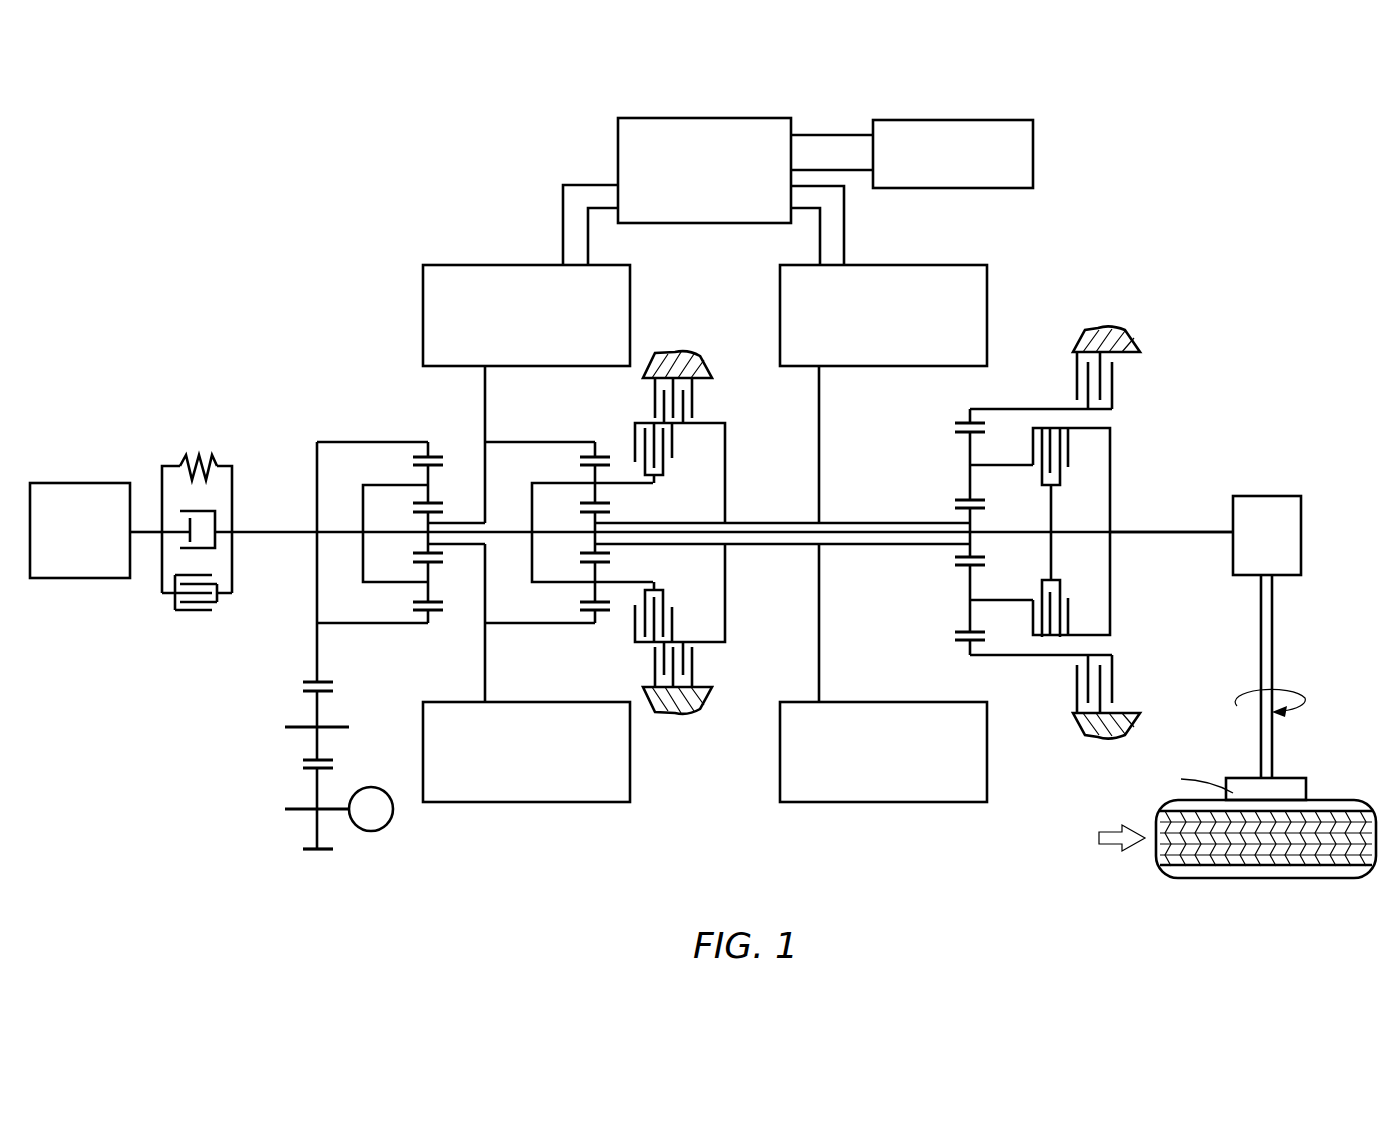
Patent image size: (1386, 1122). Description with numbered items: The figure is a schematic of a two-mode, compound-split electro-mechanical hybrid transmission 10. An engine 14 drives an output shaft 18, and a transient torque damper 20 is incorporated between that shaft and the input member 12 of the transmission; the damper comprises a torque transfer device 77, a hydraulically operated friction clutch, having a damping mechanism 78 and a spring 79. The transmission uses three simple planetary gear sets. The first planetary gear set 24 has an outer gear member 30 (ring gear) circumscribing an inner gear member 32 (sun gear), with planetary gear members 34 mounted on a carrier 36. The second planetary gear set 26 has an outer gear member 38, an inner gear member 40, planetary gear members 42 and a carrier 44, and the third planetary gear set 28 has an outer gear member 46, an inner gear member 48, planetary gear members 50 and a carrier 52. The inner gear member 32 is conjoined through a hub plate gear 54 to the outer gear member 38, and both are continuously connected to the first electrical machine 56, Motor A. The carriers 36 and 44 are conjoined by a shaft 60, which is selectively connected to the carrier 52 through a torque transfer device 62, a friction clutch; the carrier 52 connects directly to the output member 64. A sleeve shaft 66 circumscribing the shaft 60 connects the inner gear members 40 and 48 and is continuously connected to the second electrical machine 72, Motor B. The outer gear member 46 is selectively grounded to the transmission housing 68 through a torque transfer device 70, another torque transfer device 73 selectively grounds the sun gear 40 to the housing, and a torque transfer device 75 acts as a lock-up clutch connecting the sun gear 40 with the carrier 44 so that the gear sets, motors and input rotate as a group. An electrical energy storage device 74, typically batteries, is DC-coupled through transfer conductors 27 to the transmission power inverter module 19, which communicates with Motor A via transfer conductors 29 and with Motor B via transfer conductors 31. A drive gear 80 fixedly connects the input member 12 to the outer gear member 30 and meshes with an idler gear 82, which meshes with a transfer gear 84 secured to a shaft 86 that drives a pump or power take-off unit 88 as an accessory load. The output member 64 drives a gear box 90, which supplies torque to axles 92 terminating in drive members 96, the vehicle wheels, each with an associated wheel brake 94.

The hybrid transmission 10 is at (380, 228).
The input member 12 is at (300, 531).
The engine 14 is at (86, 483).
The output shaft 18 is at (150, 531).
The transmission power inverter module 19 is at (618, 135).
The transient torque damper 20 is at (183, 386).
The first planetary gear set 24 is at (418, 438).
The second planetary gear set 26 is at (590, 438).
The transfer conductors 27 is at (832, 135).
The third planetary gear set 28 is at (960, 412).
The transfer conductors 29 is at (563, 226).
The outer gear member 30 is at (437, 456).
The transfer conductors 31 is at (846, 216).
The inner gear member 32 is at (431, 512).
The planetary gear members 34 is at (426, 478).
The carrier 36 is at (362, 560).
The outer gear member 38 is at (602, 456).
The inner gear member 40 is at (606, 515).
The planetary gear members 42 is at (592, 478).
The carrier 44 is at (532, 562).
The outer gear member 46 is at (955, 420).
The inner gear member 48 is at (958, 514).
The planetary gear members 50 is at (968, 440).
The carrier 52 is at (1112, 445).
The hub plate gear 54 is at (486, 505).
The first electrical machine 56 is at (423, 302).
The shaft 60 is at (792, 533).
The torque transfer device 62 is at (1080, 472).
The output member 64 is at (1207, 532).
The sleeve shaft 66 is at (762, 523).
The transmission housing 68 is at (668, 352).
The torque transfer device 70 is at (1067, 378).
The second electrical machine 72 is at (990, 280).
The torque transfer device 73 is at (700, 402).
The electrical energy storage device 74 is at (1035, 140).
The torque transfer device 75 is at (673, 456).
The torque transfer device 77 is at (172, 606).
The damping mechanism 78 is at (206, 512).
The spring 79 is at (195, 455).
The drive gear 80 is at (317, 598).
The idler gear 82 is at (313, 718).
The transfer gear 84 is at (313, 829).
The shaft 86 is at (336, 812).
The hydraulic/transmission fluid pump and/or power take-off unit 88 is at (383, 828).
The gear box 90 is at (1233, 562).
The vehicular axles 92 is at (1275, 655).
The wheel brake 94 is at (1308, 792).
The drive members 96 is at (1175, 870).